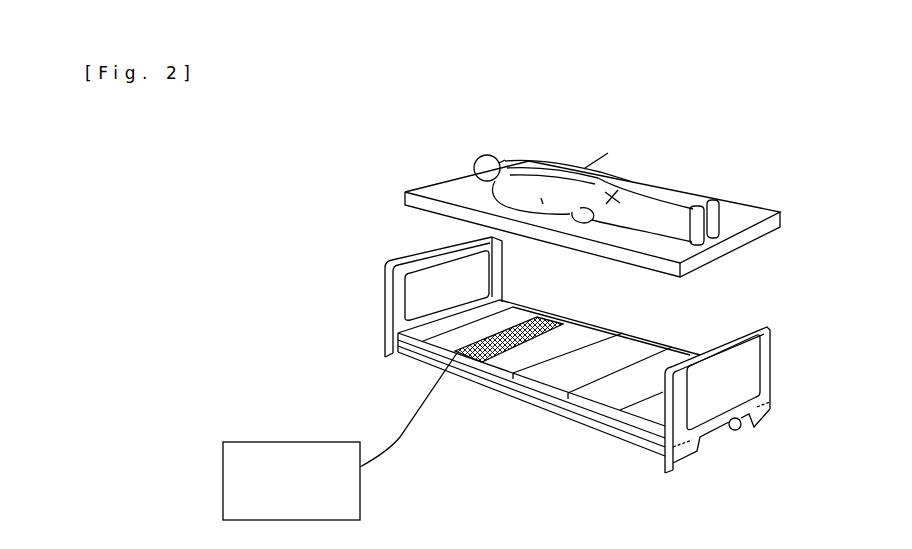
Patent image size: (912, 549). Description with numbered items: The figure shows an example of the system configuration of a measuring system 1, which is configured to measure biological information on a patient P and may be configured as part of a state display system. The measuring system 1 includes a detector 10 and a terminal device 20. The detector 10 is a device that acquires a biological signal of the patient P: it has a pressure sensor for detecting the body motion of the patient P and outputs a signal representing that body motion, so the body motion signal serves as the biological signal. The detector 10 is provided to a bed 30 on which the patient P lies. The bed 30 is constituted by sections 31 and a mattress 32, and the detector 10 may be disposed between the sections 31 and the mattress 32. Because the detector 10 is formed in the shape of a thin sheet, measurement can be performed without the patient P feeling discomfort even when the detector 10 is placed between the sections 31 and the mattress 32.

The measuring system 1 is at (788, 134).
The detector 10 is at (476, 358).
The terminal device 20 is at (318, 442).
The bed 30 is at (813, 185).
The sections 31 is at (647, 447).
The mattress 32 is at (733, 214).